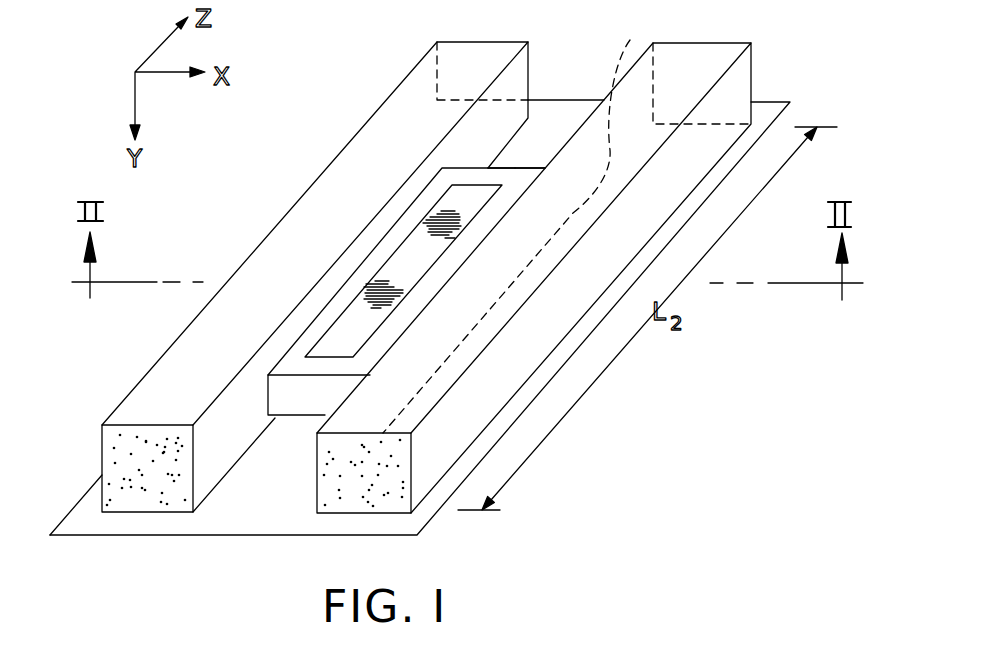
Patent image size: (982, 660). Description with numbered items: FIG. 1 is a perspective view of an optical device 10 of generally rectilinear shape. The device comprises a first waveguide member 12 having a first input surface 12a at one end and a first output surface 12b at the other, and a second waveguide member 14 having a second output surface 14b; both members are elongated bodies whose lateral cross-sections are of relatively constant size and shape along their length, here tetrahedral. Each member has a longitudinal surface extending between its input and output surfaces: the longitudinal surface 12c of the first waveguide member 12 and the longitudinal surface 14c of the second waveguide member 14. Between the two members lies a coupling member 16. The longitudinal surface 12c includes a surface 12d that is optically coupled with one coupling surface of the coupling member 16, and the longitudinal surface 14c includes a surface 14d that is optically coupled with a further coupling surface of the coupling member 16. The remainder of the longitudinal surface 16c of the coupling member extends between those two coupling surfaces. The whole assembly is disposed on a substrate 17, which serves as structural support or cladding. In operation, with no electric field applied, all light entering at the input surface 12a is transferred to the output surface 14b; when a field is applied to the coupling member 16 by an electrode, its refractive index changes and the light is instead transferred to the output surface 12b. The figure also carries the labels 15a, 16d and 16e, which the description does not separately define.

The optical device 10 is at (414, 279).
The first waveguide member 12 is at (272, 263).
The first input surface 12a is at (113, 467).
The first output surface 12b is at (467, 60).
The longitudinal surface 12c is at (292, 228).
The surface 12d is at (268, 378).
The second waveguide member 14 is at (548, 279).
The second output surface 14b is at (393, 488).
The longitudinal surface 14c is at (657, 213).
The surface 14d is at (593, 428).
The groove 15a is at (370, 330).
The coupling member 16 is at (347, 251).
The longitudinal surface of the coupling member 16c is at (527, 170).
The front end of layer 16d is at (300, 403).
The rear end of layer 16e is at (518, 188).
The substrate 17 is at (766, 113).